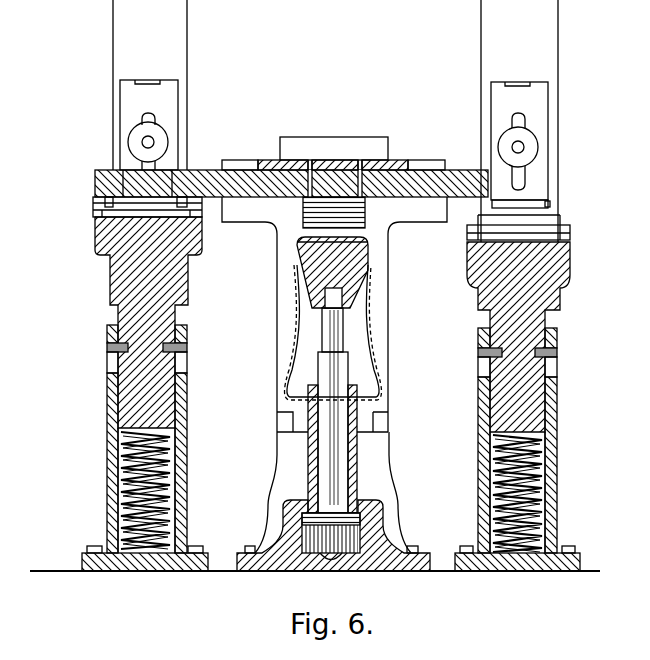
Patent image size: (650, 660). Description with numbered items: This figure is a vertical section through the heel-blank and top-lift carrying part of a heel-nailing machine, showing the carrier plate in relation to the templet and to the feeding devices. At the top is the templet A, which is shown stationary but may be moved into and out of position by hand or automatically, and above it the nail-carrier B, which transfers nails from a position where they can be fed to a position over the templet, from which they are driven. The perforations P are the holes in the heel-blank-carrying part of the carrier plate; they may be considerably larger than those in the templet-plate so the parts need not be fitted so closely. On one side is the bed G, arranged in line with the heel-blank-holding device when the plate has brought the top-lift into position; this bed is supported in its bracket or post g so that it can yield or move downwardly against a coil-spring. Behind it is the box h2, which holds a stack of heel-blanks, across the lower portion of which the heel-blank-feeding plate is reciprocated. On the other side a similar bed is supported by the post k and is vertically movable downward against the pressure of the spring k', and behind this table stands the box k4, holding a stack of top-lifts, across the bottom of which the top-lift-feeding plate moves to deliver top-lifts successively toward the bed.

The box k4 is at (150, 85).
The box h2 is at (519, 121).
The perforations P is at (303, 180).
The nail-carrier B is at (334, 136).
The templet A is at (394, 160).
The bed G is at (522, 247).
The post k is at (135, 322).
The spring k' is at (118, 490).
The bracket or post g is at (553, 431).